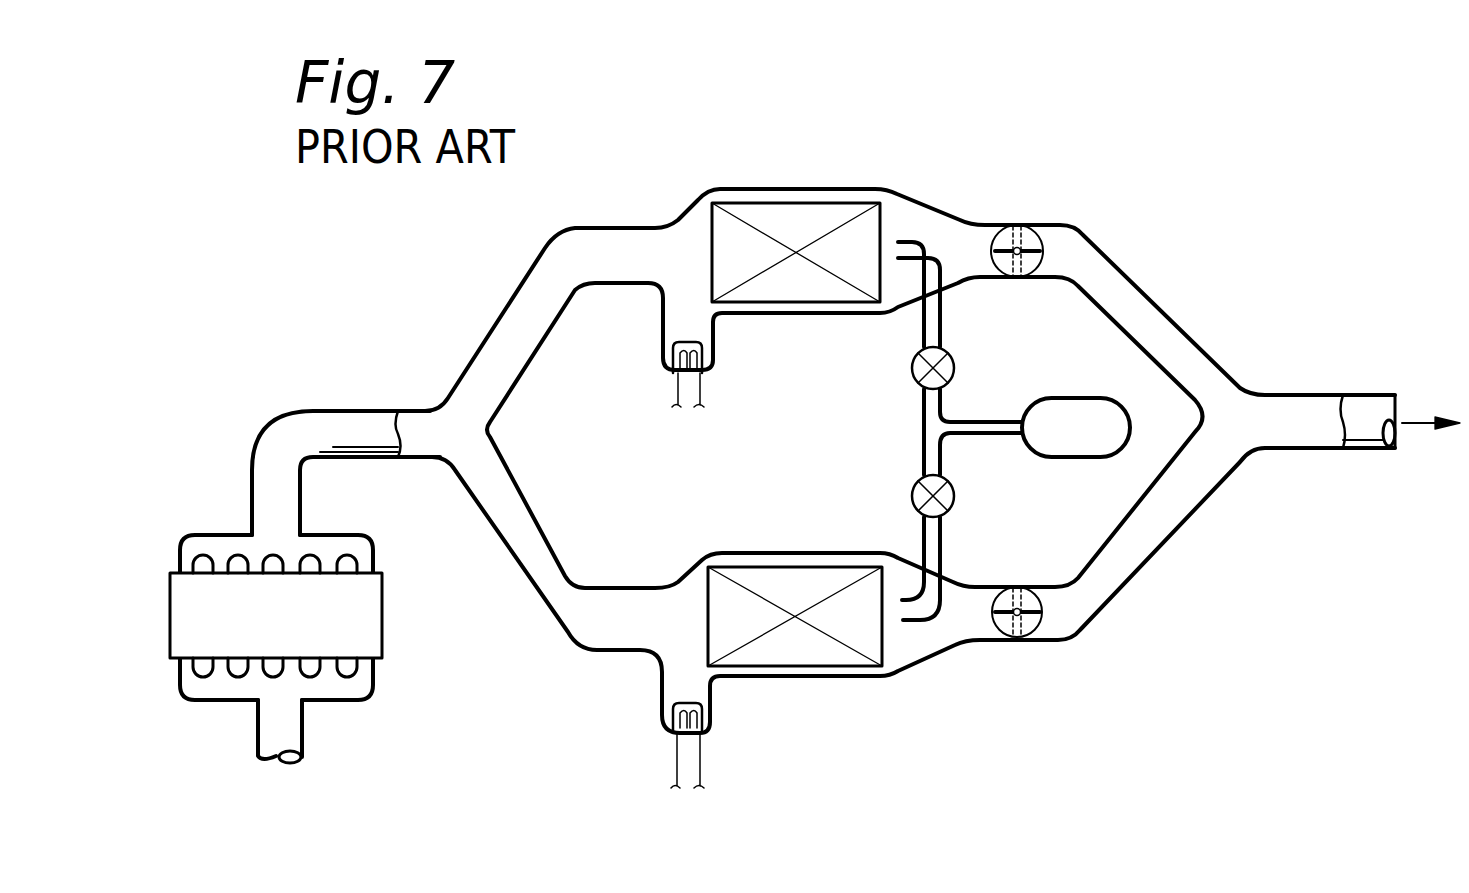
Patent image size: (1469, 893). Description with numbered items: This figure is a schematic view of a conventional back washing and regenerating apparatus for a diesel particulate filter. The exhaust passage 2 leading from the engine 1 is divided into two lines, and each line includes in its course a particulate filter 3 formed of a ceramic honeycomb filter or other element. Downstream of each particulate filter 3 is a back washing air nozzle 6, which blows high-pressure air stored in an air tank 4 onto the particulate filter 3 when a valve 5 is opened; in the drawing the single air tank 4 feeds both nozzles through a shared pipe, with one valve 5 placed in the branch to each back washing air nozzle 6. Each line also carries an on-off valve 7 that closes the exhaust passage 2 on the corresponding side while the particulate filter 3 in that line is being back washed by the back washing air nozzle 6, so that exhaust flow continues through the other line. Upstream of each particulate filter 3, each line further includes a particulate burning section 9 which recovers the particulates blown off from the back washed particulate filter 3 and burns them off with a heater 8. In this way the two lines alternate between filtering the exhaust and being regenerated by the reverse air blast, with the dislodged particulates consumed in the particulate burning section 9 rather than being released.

The engine 1 is at (214, 530).
The exhaust passage 2 is at (346, 402).
The particulate filter 3 is at (778, 218).
The air tank 4 is at (1073, 398).
The valve 5 is at (951, 357).
The back washing air nozzle 6 is at (910, 242).
The on-off valve 7 is at (1023, 237).
The heater 8 is at (673, 399).
The particulate burning section 9 is at (688, 330).